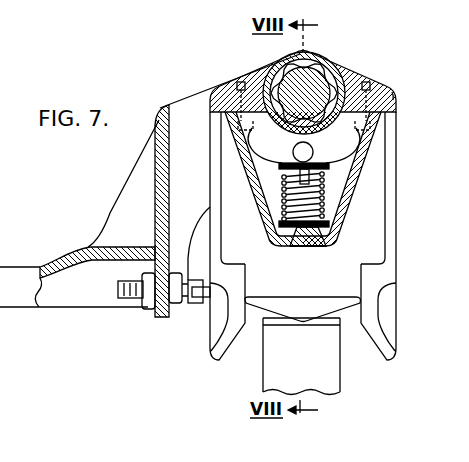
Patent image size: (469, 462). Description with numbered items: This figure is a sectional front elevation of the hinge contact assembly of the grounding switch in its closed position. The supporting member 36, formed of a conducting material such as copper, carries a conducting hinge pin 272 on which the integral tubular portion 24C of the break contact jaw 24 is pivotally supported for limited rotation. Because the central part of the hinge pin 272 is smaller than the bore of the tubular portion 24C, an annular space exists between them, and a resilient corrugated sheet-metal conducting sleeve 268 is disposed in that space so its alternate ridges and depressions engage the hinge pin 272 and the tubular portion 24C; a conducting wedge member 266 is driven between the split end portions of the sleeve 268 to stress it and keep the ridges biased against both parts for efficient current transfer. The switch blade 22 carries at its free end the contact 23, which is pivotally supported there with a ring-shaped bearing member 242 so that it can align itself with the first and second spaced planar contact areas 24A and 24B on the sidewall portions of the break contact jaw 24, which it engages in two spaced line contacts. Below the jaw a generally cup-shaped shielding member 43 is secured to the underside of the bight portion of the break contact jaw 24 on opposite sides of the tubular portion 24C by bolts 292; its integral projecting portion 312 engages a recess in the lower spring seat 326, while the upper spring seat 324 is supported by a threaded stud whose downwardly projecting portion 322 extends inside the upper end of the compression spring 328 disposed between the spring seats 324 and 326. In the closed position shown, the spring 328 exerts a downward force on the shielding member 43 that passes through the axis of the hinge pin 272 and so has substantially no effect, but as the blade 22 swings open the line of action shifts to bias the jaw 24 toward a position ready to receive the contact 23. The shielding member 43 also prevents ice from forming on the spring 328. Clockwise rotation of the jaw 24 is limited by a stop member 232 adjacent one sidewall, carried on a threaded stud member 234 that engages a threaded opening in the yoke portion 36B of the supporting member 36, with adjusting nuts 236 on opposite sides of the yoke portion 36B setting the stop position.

The switch blade 22 is at (335, 375).
The contact 23 is at (312, 308).
The break contact jaw 24 is at (397, 230).
The first planar contact area 24A is at (245, 290).
The second planar contact area 24B is at (360, 282).
The tubular portion 24C is at (307, 58).
The supporting member 36 is at (187, 103).
The yoke portion 36B is at (155, 183).
The shielding member 43 is at (266, 231).
The stop member 232 is at (195, 305).
The threaded stud member 234 is at (118, 291).
The adjusting nuts 236 is at (148, 308).
The ring-shaped bearing member 242 is at (296, 324).
The conducting wedge member 266 is at (306, 60).
The conducting sleeve 268 is at (345, 74).
The conducting hinge pin 272 is at (332, 72).
The bolts 292 is at (392, 93).
The projecting portion 312 is at (310, 247).
The downwardly projecting portion 322 is at (320, 180).
The upper spring seat 324 is at (281, 161).
The lower spring seat 326 is at (328, 229).
The compression spring 328 is at (283, 205).